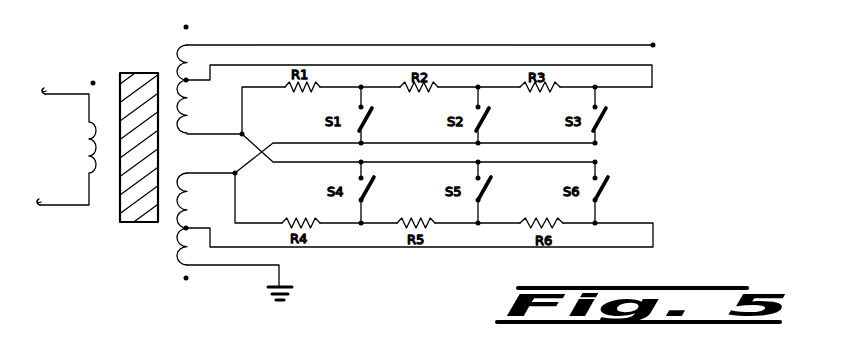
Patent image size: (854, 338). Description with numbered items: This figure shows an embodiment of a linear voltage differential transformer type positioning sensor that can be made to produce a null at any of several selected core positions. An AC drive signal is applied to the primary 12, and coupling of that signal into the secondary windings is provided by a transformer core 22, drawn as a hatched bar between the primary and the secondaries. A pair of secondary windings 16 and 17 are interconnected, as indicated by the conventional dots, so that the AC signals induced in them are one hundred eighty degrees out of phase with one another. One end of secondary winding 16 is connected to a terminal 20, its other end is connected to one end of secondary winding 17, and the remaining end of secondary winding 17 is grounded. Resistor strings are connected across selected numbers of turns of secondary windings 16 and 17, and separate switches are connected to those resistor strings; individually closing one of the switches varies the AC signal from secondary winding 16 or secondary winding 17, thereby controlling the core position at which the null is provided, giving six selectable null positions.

The primary winding 12 is at (88, 152).
The secondary winding 16 is at (180, 106).
The secondary winding 17 is at (181, 200).
The terminal 20 is at (653, 45).
The transformer core 22 is at (134, 76).